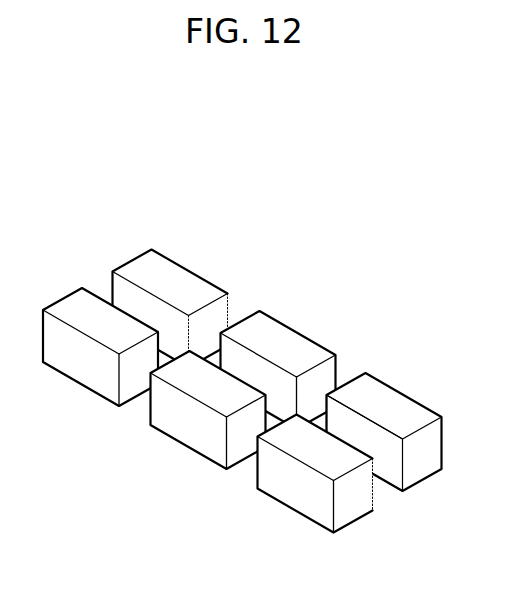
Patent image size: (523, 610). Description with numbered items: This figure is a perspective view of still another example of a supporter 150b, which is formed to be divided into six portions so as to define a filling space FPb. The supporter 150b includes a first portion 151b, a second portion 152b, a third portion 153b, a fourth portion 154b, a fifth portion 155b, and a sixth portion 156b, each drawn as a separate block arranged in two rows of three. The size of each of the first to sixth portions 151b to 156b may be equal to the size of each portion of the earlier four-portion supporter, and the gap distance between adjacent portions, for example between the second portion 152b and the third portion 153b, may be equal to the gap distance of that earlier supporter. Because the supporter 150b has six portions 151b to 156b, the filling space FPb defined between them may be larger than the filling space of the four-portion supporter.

The supporter 150b is at (287, 226).
The first portion 151b is at (83, 367).
The second portion 152b is at (172, 273).
The third portion 153b is at (292, 343).
The fourth portion 154b is at (396, 435).
The fifth portion 155b is at (303, 497).
The sixth portion 156b is at (197, 435).
The filling space FPb is at (394, 455).